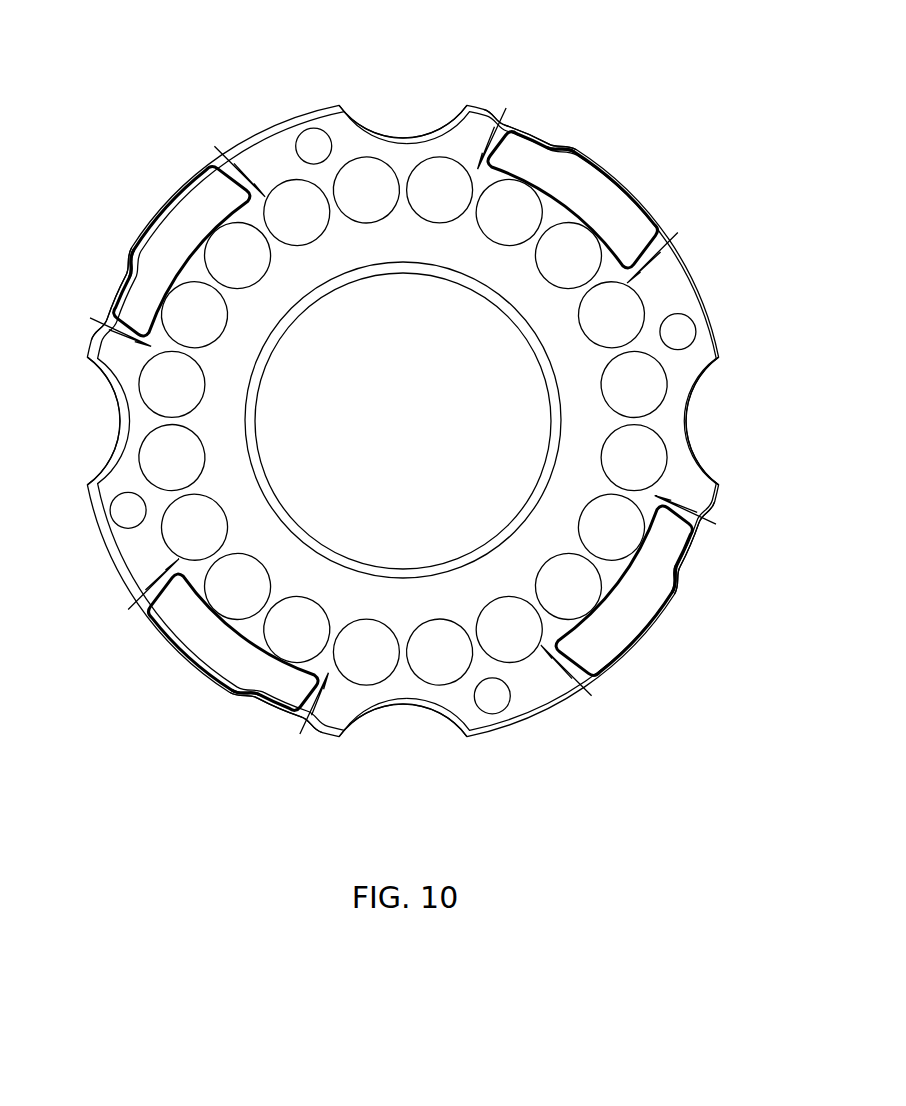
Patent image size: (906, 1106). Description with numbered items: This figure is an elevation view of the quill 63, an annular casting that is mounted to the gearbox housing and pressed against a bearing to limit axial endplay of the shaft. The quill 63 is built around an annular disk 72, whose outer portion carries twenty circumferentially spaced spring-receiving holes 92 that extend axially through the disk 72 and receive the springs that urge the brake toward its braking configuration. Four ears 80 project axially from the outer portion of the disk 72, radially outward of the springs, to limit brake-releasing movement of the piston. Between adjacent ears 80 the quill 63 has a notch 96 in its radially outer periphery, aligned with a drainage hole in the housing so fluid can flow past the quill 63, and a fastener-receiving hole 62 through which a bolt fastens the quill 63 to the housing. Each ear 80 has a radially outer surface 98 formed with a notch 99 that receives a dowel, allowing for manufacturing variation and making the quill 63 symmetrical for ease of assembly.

The quill 63 is at (224, 88).
The notch 96 is at (415, 135).
The notch 99 is at (562, 143).
The radially outer surface 98 is at (603, 168).
The ear 80 is at (620, 205).
The hole 62 is at (690, 328).
The spring-receiving hole 92 is at (436, 210).
The annular disk 72 is at (545, 318).